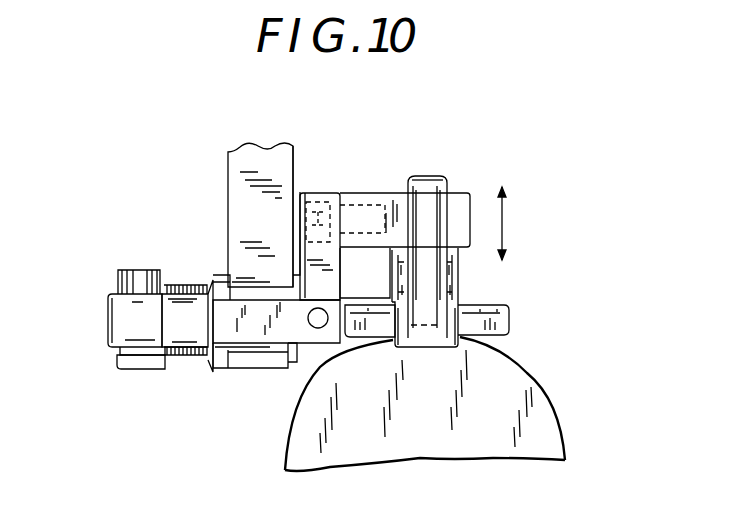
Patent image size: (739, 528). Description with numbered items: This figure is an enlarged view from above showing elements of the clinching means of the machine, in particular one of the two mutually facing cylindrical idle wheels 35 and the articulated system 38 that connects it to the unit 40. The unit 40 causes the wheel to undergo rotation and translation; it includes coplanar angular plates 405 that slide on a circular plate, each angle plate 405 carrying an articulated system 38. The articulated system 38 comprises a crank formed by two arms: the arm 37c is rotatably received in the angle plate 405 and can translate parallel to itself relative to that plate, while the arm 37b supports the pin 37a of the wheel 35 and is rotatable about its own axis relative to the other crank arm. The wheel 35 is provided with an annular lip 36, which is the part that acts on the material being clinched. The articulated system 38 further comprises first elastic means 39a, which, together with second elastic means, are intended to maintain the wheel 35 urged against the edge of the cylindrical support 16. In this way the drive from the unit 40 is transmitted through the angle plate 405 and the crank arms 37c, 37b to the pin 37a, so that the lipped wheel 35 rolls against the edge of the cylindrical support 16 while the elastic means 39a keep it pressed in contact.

The cylindrical support 16 is at (560, 423).
The idle wheel 35 is at (507, 330).
The annular lip 36 is at (510, 308).
The pin 37a is at (447, 181).
The crank arm 37b is at (320, 205).
The crank arm 37c is at (288, 327).
The articulated system 38 is at (420, 148).
The first elastic means 39a is at (188, 357).
The unit 40 is at (131, 220).
The angular plate 405 is at (228, 168).